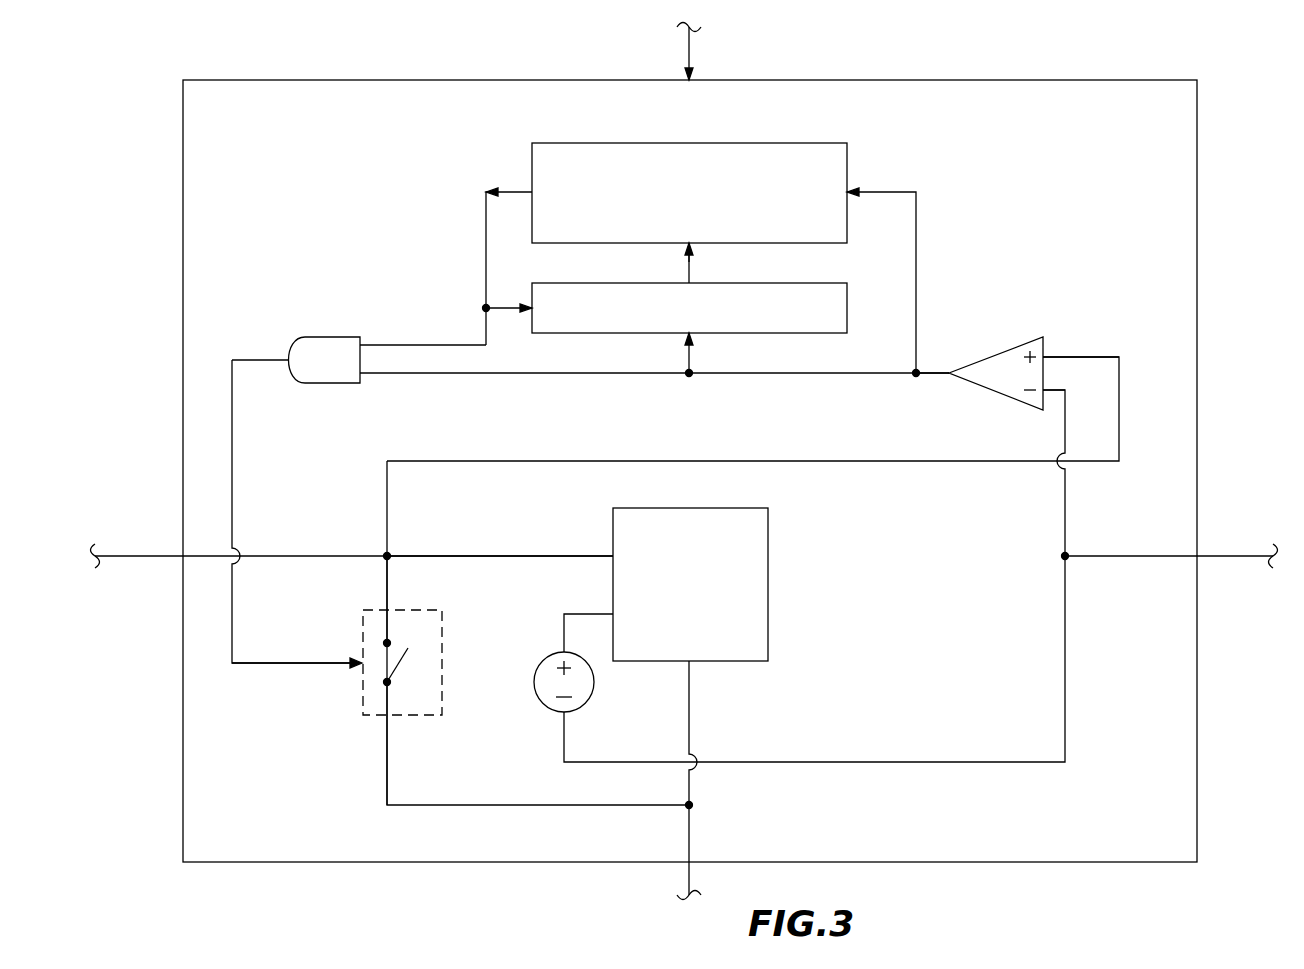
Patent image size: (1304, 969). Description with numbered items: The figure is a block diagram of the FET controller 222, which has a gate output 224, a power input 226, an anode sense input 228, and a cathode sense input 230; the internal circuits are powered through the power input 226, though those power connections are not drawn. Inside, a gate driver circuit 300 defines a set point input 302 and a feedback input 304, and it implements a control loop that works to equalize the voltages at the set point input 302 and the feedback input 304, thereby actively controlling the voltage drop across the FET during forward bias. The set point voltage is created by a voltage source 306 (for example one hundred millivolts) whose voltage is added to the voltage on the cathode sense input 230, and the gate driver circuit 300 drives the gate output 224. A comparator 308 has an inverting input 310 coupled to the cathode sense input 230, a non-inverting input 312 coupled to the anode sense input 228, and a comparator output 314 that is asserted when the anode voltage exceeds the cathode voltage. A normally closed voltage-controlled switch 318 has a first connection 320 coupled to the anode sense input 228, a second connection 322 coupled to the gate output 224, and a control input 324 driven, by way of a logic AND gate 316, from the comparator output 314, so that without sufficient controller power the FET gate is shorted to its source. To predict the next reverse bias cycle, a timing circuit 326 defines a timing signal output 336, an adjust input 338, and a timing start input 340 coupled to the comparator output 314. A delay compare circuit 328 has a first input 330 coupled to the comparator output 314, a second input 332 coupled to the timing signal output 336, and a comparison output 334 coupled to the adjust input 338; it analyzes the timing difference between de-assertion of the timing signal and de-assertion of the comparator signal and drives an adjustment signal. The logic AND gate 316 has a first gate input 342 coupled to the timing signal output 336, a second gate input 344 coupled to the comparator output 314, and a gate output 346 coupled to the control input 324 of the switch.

The FET controller 222 is at (316, 149).
The gate output 224 is at (686, 863).
The power input 226 is at (692, 79).
The anode sense input 228 is at (183, 554).
The cathode sense input 230 is at (1197, 555).
The gate driver circuit 300 is at (712, 644).
The set point input 302 is at (612, 612).
The feedback input 304 is at (612, 554).
The voltage source 306 is at (550, 707).
The comparator 308 is at (992, 340).
The inverting input 310 is at (1046, 396).
The non-inverting input 312 is at (1045, 355).
The comparator output 314 is at (950, 375).
The logic AND gate 316 is at (320, 336).
The voltage-controlled switch 318 is at (346, 717).
The first connection 320 is at (388, 611).
The second connection 322 is at (385, 716).
The control input 324 is at (355, 660).
The timing circuit 326 is at (710, 221).
The delay compare circuit 328 is at (849, 298).
The first input 330 is at (692, 336).
The second input 332 is at (531, 312).
The comparison output 334 is at (692, 280).
The timing signal output 336 is at (531, 191).
The adjust input 338 is at (686, 246).
The timing start input 340 is at (849, 191).
The first gate input 342 is at (365, 343).
The second gate input 344 is at (365, 375).
The gate output 346 is at (287, 357).